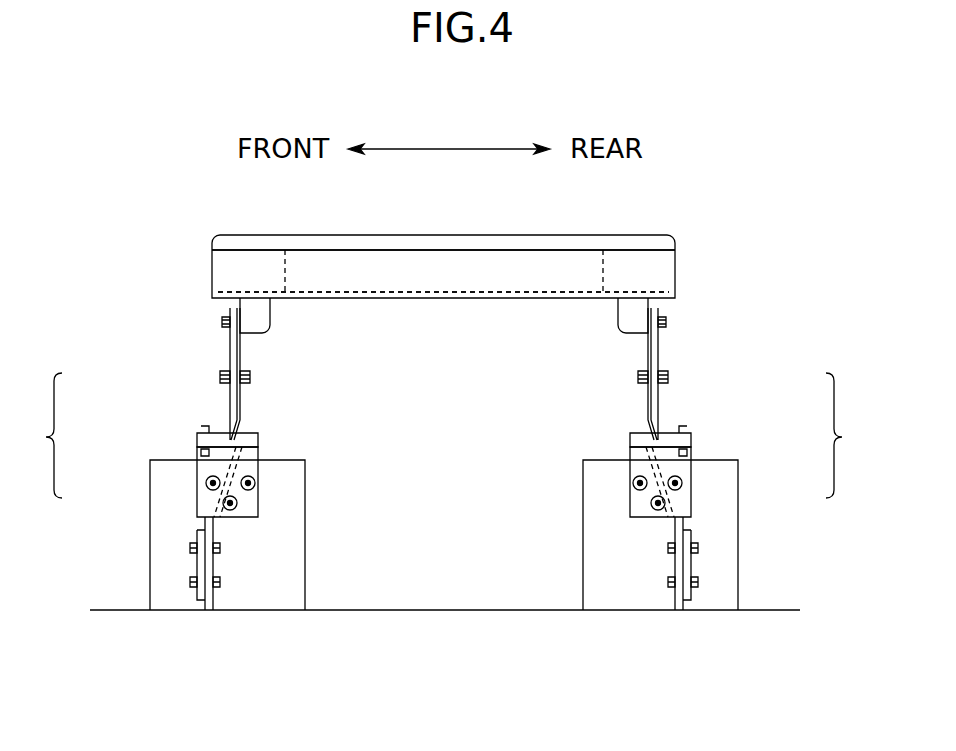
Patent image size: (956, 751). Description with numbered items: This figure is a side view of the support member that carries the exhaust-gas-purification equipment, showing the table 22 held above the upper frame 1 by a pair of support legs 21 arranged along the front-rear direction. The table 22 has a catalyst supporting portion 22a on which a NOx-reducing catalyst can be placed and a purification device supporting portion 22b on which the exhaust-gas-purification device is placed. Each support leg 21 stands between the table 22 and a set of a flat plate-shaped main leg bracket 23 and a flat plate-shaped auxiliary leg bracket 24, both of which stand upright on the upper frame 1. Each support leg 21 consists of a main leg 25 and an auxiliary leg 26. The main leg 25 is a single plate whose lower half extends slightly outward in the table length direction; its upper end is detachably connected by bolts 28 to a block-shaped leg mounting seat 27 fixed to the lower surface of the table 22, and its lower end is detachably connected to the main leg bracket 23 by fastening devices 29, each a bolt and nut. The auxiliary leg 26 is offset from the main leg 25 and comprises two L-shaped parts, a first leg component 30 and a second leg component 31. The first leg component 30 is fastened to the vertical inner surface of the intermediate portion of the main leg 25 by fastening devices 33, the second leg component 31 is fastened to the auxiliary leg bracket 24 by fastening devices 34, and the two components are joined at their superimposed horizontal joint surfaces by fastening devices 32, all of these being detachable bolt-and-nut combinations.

The upper frame 1 is at (417, 610).
The support leg 21 is at (445, 435).
The table 22 is at (678, 273).
The catalyst supporting portion 22a is at (527, 236).
The purification device supporting portion 22b is at (478, 281).
The main leg bracket 23 is at (199, 603).
The auxiliary leg bracket 24 is at (150, 585).
The main leg 25 is at (230, 398).
The auxiliary leg 26 is at (195, 488).
The leg mounting seat 27 is at (270, 320).
The bolts 28 is at (221, 322).
The fastening devices 29 is at (221, 582).
The first leg component 30 is at (243, 420).
The second leg component 31 is at (259, 470).
The fastening devices 32 is at (199, 430).
The fastening devices 33 is at (251, 377).
The fastening devices 34 is at (236, 510).